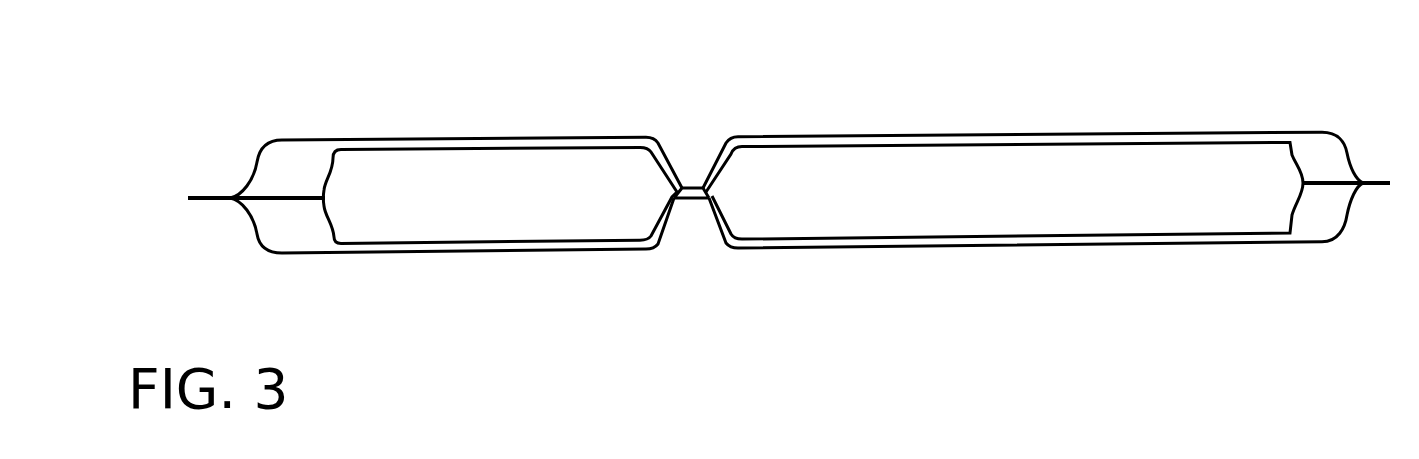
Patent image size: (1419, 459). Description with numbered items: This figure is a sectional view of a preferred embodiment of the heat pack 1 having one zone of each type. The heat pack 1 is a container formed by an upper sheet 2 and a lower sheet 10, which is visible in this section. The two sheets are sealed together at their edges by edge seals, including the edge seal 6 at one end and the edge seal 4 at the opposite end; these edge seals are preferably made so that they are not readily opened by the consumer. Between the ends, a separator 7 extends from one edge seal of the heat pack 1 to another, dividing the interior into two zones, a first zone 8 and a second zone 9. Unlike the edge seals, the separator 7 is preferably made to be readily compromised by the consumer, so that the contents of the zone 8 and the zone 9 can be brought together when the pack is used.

The heat pack 1 is at (158, 202).
The upper sheet 2 is at (511, 140).
The edge seal 4 is at (1357, 182).
The edge seal 6 is at (228, 198).
The separator 7 is at (687, 180).
The zone 8 is at (428, 222).
The zone 9 is at (1058, 215).
The lower sheet 10 is at (544, 248).